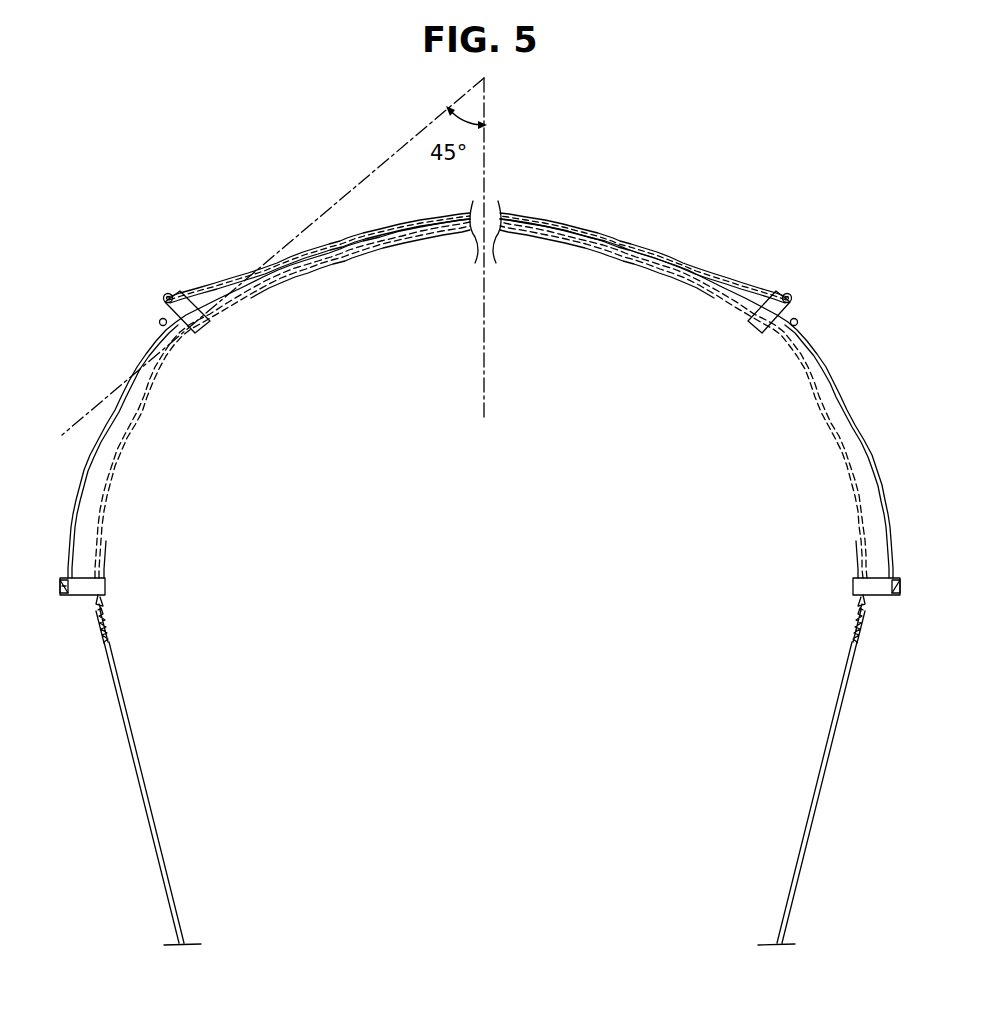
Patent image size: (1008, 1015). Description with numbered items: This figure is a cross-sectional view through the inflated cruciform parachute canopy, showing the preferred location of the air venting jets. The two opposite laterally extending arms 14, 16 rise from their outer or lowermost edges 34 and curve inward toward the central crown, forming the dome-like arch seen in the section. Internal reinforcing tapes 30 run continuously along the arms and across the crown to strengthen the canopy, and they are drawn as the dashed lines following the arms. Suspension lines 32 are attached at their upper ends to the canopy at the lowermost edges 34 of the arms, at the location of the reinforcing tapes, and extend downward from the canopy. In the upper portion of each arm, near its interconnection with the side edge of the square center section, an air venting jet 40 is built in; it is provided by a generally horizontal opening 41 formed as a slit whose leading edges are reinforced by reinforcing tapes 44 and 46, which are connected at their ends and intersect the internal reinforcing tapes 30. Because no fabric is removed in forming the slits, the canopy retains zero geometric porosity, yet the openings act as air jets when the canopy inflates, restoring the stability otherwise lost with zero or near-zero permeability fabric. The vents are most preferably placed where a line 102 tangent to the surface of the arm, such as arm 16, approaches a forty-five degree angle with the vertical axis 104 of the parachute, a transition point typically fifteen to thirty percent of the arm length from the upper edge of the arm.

The arm 14 is at (817, 360).
The arm 16 is at (143, 357).
The internal reinforcing tape 30 is at (105, 538).
The suspension line 32 is at (147, 767).
The outer edge of arm 34 is at (80, 592).
The air venting jet 40 is at (140, 303).
The opening 41 is at (158, 322).
The reinforcing tape 44 is at (196, 333).
The reinforcing tape 46 is at (168, 292).
The tangent line 102 is at (365, 180).
The vertical axis 104 is at (484, 330).